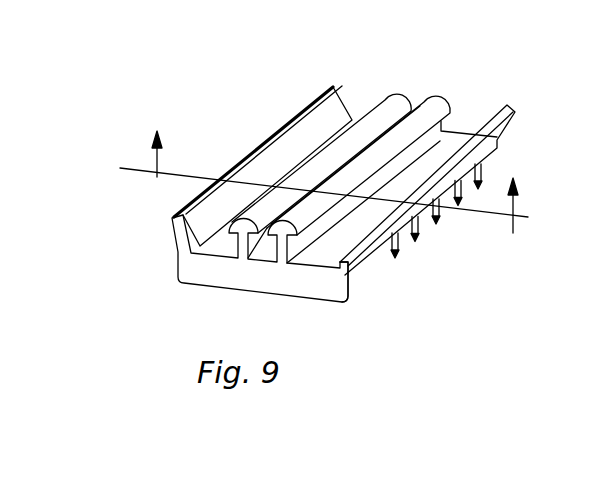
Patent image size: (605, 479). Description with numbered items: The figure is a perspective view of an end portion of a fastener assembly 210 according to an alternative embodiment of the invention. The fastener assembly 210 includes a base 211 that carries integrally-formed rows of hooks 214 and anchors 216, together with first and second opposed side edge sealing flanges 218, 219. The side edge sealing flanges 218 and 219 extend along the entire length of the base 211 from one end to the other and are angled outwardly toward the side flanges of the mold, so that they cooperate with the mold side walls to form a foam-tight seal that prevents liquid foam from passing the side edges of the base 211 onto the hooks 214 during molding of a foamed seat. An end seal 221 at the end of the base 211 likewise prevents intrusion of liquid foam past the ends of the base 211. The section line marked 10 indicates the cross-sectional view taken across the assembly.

The fastener assembly 210 is at (208, 108).
The base 211 is at (217, 244).
The hooks 214 is at (437, 226).
The anchors 216 is at (400, 95).
The first side edge sealing flange 218 is at (315, 97).
The second side edge sealing flange 219 is at (503, 129).
The end seal 221 is at (360, 275).
The section line 10- 10 is at (324, 196).